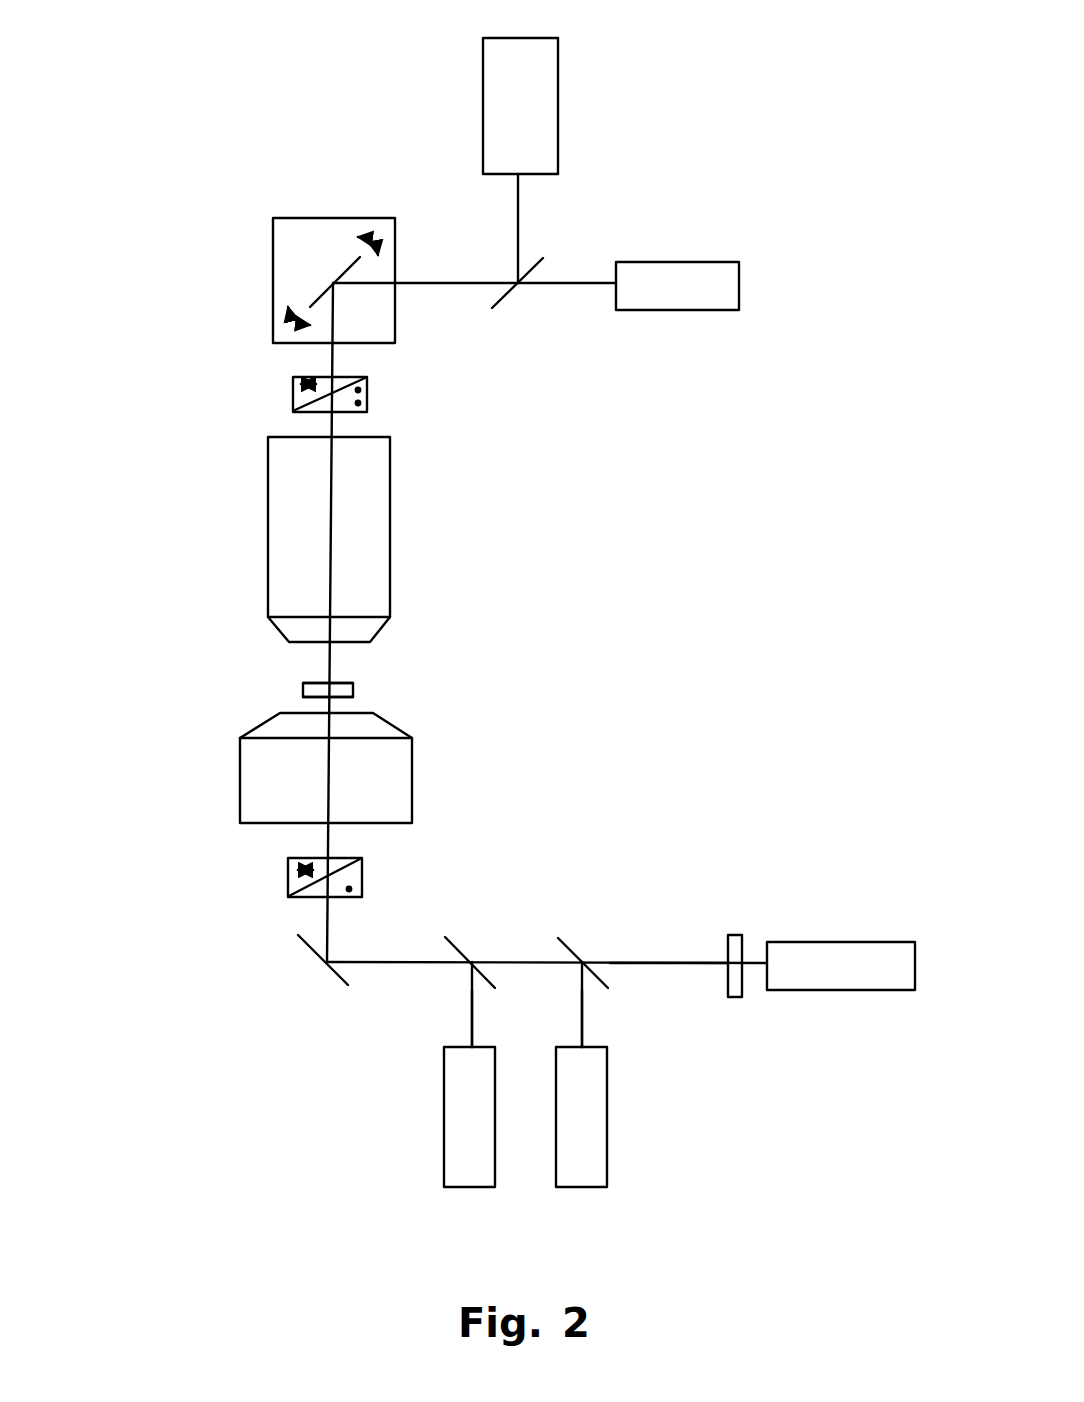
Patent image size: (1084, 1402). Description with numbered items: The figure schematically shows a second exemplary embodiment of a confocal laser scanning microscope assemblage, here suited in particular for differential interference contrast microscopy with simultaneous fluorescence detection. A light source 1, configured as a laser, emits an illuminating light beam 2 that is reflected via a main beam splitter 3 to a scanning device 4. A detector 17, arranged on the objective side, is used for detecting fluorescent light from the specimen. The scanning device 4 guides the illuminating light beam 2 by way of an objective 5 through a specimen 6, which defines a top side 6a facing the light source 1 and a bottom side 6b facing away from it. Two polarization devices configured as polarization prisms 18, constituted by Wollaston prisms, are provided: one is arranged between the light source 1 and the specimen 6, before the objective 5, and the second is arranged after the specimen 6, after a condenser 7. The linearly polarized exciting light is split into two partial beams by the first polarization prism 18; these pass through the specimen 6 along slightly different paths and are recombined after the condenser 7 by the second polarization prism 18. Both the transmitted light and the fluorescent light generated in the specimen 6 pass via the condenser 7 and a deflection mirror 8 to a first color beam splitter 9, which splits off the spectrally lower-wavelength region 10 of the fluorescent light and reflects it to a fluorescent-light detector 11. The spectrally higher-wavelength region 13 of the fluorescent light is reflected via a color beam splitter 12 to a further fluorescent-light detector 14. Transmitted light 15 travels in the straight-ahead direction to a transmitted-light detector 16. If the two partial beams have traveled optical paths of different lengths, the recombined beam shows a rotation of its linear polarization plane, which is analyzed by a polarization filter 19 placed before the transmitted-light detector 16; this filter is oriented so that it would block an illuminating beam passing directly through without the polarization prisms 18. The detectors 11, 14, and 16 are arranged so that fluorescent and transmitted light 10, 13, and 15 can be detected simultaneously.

The light source 1 is at (520, 106).
The illuminating light beam 2 is at (517, 235).
The main beam splitter 3 is at (532, 268).
The scanning device 4 is at (296, 242).
The objective 5 is at (292, 548).
The specimen 6 is at (313, 683).
The top side 6a is at (347, 682).
The bottom side 6b is at (343, 697).
The condenser 7 is at (265, 783).
The deflection mirror 8 is at (310, 955).
The first color beam splitter 9 is at (457, 940).
The spectrally lower-wavelength region 10 is at (470, 1010).
The fluorescent-light detector 11 is at (469, 1117).
The color beam splitter 12 is at (560, 940).
The spectrally higher-wavelength region 13 is at (582, 1023).
The further fluorescent-light detector 14 is at (581, 1117).
The transmitted light 15 is at (633, 963).
The transmitted-light detector 16 is at (841, 970).
The detector 17 is at (677, 289).
The polarization prism 18 is at (367, 391).
The polarization filter 19 is at (740, 953).